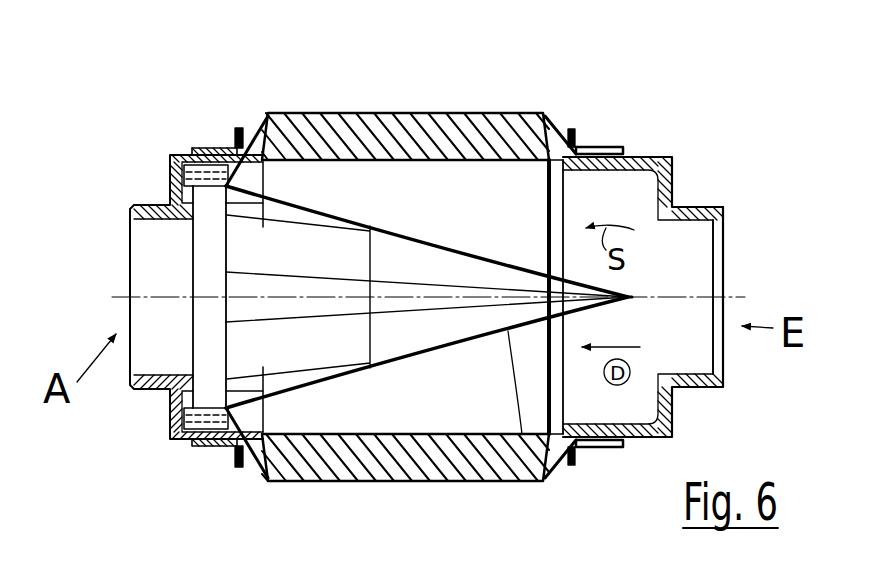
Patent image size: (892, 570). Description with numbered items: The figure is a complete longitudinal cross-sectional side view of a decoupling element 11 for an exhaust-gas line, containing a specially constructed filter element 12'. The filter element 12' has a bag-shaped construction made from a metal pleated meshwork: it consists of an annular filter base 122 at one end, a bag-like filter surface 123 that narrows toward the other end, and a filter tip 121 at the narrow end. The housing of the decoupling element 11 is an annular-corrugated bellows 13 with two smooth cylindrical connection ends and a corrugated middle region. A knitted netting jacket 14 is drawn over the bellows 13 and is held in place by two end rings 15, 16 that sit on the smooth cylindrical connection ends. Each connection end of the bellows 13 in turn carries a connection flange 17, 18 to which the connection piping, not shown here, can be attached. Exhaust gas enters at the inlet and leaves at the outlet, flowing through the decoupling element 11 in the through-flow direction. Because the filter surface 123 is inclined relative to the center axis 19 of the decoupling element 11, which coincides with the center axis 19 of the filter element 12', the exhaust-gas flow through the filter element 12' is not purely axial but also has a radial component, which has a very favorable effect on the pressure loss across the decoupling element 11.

The decoupling element 11 is at (647, 145).
The filter element 12' is at (578, 318).
The annular-corrugated bellows 13 is at (428, 481).
The knitted netting jacket 14 is at (250, 146).
The end ring 15 is at (201, 147).
The end ring 16 is at (572, 146).
The connection flange 17 is at (138, 204).
The connection flange 18 is at (696, 204).
The center axis 19 is at (153, 298).
The filter tip 121 is at (630, 296).
The annular filter base 122 is at (210, 440).
The filter surface 123 is at (341, 384).